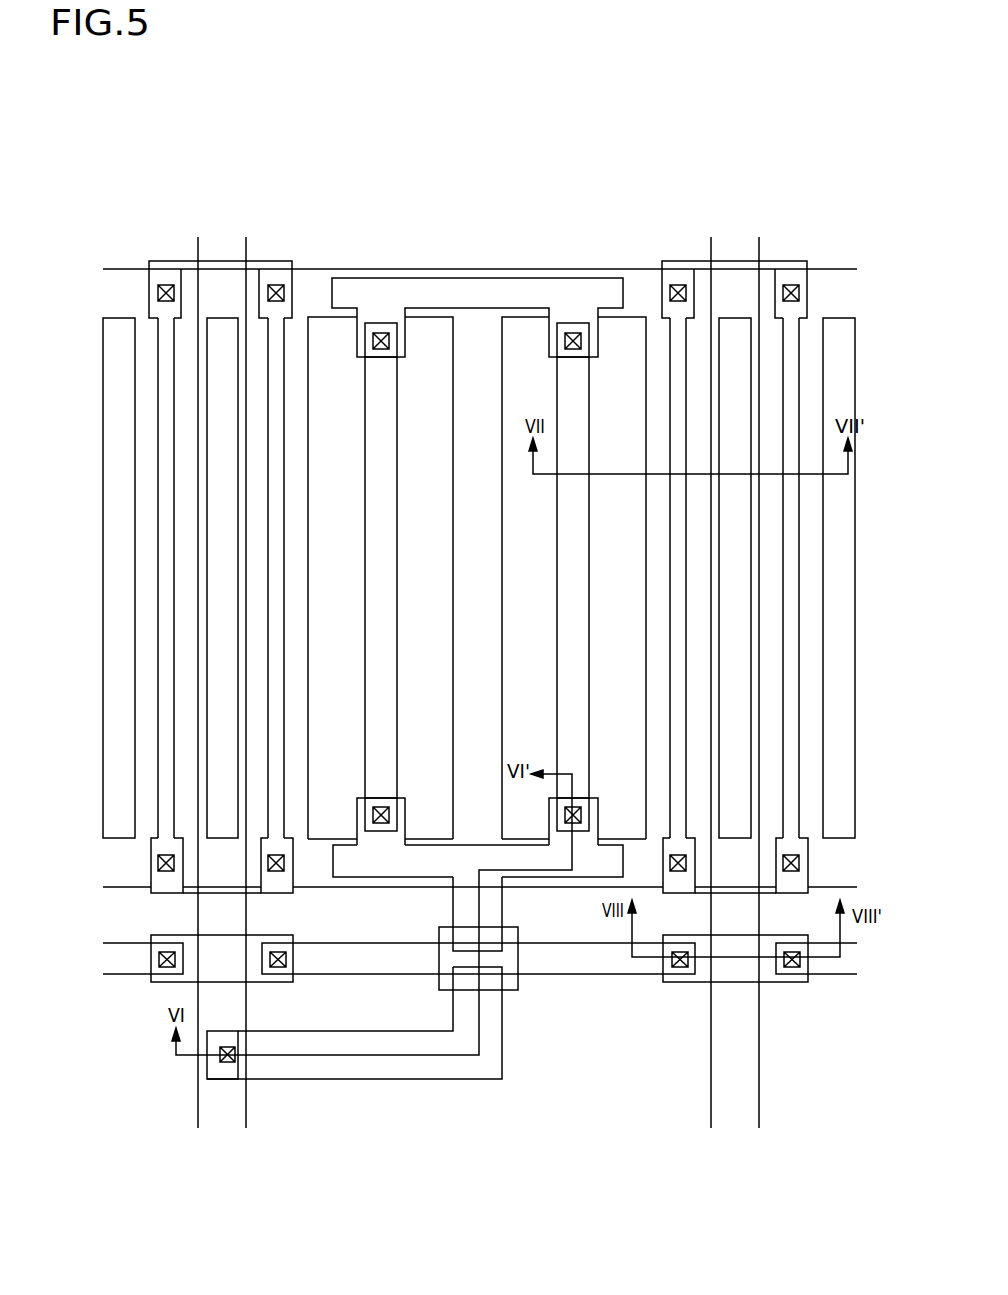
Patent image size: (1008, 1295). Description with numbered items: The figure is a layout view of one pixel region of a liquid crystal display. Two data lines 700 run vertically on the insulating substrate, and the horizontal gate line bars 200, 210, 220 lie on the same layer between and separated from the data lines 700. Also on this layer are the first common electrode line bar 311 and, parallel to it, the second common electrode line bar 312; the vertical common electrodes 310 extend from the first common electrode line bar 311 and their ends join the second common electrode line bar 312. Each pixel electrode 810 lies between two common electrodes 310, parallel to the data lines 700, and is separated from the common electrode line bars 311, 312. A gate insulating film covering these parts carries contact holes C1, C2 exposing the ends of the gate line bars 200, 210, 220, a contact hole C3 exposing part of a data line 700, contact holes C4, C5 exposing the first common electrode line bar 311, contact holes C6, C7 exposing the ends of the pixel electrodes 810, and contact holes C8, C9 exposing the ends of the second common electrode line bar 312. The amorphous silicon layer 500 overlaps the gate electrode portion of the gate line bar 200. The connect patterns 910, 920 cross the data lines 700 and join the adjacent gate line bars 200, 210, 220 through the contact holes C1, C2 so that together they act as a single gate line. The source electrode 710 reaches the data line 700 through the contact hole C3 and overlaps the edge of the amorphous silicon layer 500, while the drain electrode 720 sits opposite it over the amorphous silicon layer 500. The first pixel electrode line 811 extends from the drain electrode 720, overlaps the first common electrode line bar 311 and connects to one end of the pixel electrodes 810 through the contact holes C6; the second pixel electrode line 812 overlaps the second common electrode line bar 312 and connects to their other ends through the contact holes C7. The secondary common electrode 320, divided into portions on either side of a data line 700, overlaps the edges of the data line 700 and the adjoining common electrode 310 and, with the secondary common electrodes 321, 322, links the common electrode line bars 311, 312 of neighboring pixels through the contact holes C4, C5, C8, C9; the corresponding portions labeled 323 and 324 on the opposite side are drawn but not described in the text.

The data line 700 is at (248, 1113).
The gate line bar 200 is at (582, 973).
The gate line bar 210 is at (840, 978).
The gate line bar 220 is at (123, 970).
The common electrode 310 is at (646, 365).
The first common electrode line bar 311 is at (333, 840).
The second common electrode line bar 312 is at (373, 268).
The secondary common electrode 320 is at (752, 722).
The secondary common electrode 321 is at (770, 893).
The secondary common electrode 322 is at (790, 260).
The common electrode connecting portion 323 is at (158, 895).
The common electrode connecting portion 324 is at (188, 260).
The amorphous silicon layer 500 is at (447, 982).
The source electrode 710 is at (493, 968).
The drain electrode 720 is at (495, 945).
The pixel electrode 810 is at (557, 552).
The first pixel electrode line 811 is at (422, 870).
The second pixel electrode line 812 is at (437, 277).
The connect pattern 910 is at (158, 983).
The connect pattern 920 is at (773, 983).
The contact hole C1 is at (288, 969).
The contact hole C2 is at (158, 960).
The contact hole C3 is at (218, 1064).
The contact hole C4 is at (287, 872).
The contact hole C5 is at (157, 863).
The contact hole C6 is at (393, 804).
The contact hole C7 is at (372, 350).
The contact hole C8 is at (277, 283).
The contact hole C9 is at (157, 286).